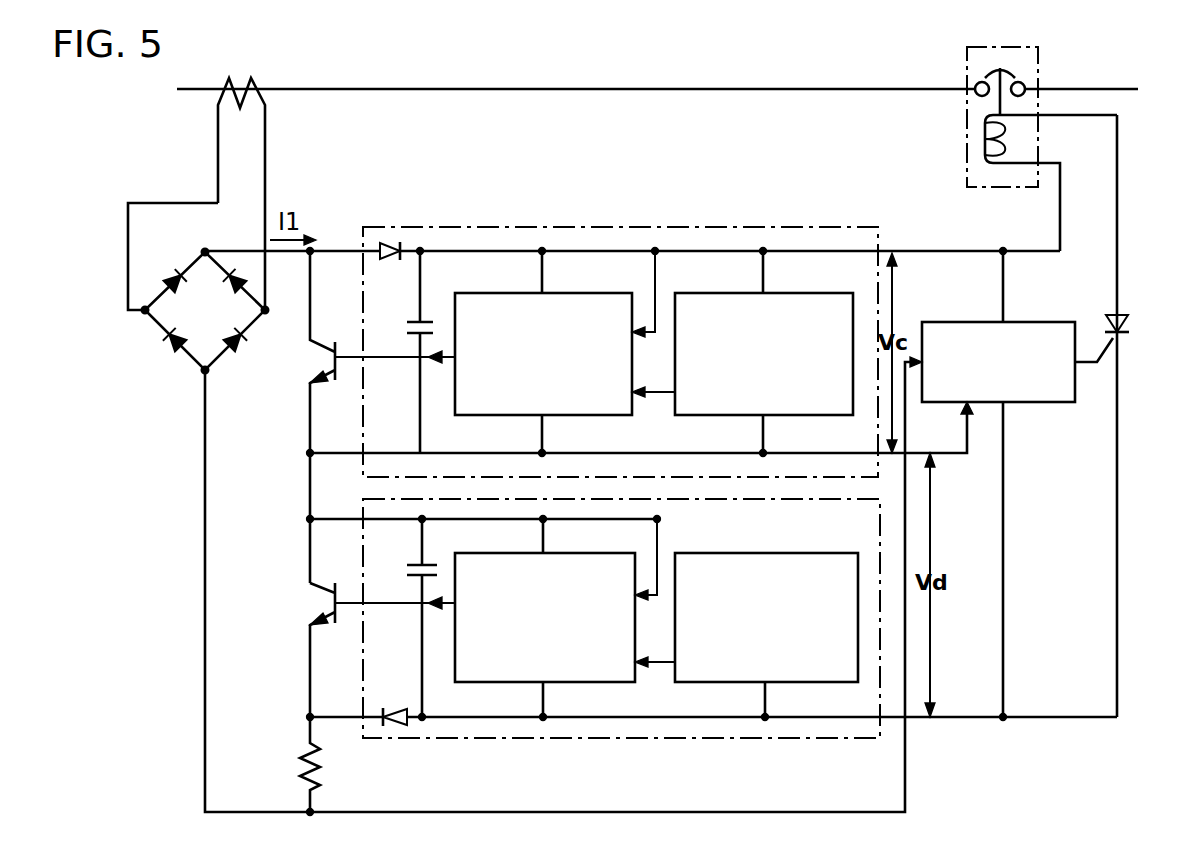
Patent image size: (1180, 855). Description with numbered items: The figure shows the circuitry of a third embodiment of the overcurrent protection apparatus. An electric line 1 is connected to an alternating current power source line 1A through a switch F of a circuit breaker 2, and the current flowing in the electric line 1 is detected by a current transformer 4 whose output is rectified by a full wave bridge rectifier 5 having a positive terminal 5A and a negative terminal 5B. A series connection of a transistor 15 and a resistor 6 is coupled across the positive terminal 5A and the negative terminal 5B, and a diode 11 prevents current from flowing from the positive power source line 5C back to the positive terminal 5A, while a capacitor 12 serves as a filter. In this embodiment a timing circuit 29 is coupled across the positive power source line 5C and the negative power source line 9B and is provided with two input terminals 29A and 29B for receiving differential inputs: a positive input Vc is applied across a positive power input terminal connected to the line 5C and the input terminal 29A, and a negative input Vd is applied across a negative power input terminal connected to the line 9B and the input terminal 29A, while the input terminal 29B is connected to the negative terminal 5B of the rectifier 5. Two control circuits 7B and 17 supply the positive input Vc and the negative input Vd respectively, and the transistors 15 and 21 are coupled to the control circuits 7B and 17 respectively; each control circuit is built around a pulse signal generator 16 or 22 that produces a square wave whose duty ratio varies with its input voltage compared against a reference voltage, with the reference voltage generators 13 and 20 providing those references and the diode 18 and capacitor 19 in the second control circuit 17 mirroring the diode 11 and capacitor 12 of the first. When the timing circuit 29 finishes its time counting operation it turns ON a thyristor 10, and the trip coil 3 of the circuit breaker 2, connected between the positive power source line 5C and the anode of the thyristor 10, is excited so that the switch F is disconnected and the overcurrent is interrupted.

The electric line 1 is at (572, 88).
The power source line 1A is at (1086, 88).
The circuit breaker 2 is at (975, 85).
The trip coil 3 is at (985, 135).
The switch F is at (1000, 66).
The current transformer 4 is at (255, 86).
The full wave bridge rectifier 5 is at (167, 345).
The positive terminal 5A is at (195, 252).
The negative terminal 5B is at (198, 378).
The positive power source line 5C is at (958, 251).
The resistor 6 is at (302, 768).
The control circuit 7B is at (545, 227).
The negative power source line 9B is at (963, 718).
The thyristor 10 is at (1119, 316).
The diode 11 is at (398, 244).
The capacitor 12 is at (428, 318).
The reference voltage generator 13 is at (790, 292).
The transistor 15 is at (320, 356).
The pulse signal generator 16 is at (603, 292).
The control circuit 17 is at (539, 738).
The diode 18 is at (394, 727).
The capacitor 19 is at (407, 560).
The reference voltage generator 20 is at (822, 683).
The transistor 21 is at (322, 606).
The pulse signal generator 22 is at (593, 683).
The timing circuit 29 is at (1050, 403).
The input terminal 29A is at (966, 456).
The input terminal 29B is at (917, 360).